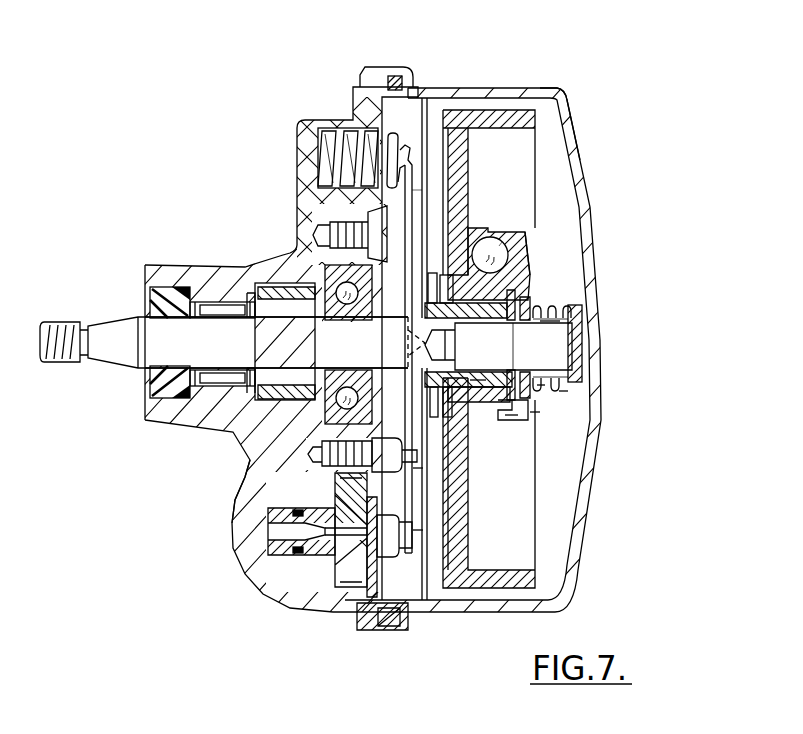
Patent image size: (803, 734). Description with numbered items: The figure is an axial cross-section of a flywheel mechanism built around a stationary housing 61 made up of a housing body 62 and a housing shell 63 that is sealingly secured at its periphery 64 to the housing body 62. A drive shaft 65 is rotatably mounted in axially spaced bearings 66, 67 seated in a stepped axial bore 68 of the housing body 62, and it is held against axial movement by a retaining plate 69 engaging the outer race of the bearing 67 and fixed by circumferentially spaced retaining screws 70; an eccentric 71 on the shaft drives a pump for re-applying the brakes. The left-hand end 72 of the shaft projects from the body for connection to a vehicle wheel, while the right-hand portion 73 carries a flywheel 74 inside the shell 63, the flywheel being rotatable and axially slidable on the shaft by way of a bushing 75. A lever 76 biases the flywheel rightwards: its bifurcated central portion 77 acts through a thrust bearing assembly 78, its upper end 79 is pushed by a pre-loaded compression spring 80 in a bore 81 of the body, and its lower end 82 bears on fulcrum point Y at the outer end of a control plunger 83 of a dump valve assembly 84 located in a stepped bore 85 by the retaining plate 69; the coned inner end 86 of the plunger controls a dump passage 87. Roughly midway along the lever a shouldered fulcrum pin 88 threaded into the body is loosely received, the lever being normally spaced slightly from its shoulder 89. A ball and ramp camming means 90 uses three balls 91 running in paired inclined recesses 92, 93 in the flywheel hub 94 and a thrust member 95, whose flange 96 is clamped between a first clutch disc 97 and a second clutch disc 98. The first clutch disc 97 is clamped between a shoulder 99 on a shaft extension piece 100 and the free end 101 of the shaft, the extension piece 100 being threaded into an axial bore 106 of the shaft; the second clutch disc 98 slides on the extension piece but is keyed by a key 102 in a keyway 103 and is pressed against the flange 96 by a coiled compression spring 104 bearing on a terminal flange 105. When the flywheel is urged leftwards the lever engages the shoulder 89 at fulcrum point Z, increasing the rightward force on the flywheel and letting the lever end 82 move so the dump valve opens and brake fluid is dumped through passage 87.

The stationary housing 61 is at (455, 80).
The housing body 62 is at (307, 142).
The housing shell 63 is at (540, 93).
The periphery 64 is at (383, 75).
The drive shaft 65 is at (113, 348).
The bearing 66 is at (218, 380).
The bearing 67 is at (320, 268).
The stepped axial bore 68 is at (262, 452).
The retaining plate 69 is at (375, 210).
The retaining screws 70 is at (372, 232).
The eccentric 71 is at (302, 287).
The left-hand end 72 is at (68, 355).
The right-hand portion 73 is at (250, 487).
The flywheel 74 is at (473, 113).
The bushing 75 is at (458, 398).
The lever 76 is at (415, 192).
The bifurcated central portion 77 is at (417, 268).
The thrust bearing assembly 78 is at (448, 275).
The upper end 79 is at (412, 185).
The compression spring 80 is at (378, 84).
The bore 81 is at (333, 135).
The lower end 82 is at (417, 545).
The control plunger 83 is at (395, 570).
The dump valve assembly 84 is at (345, 545).
The stepped bore 85 is at (268, 592).
The inner end 86 is at (328, 550).
The dump passage 87 is at (318, 530).
The fulcrum pin 88 is at (390, 462).
The shoulder 89 is at (425, 515).
The ball and ramp camming means 90 is at (518, 232).
The balls 91 is at (495, 252).
The inclined recesses 92 is at (499, 246).
The inclined recesses 93 is at (518, 275).
The flywheel hub 94 is at (512, 415).
The thrust member 95 is at (530, 267).
The flange 96 is at (527, 388).
The first clutch disc 97 is at (490, 343).
The second clutch disc 98 is at (522, 287).
The shoulder 99 is at (530, 346).
The shaft extension piece 100 is at (530, 395).
The free end 101 is at (535, 415).
The key 102 is at (547, 321).
The keyway 103 is at (582, 345).
The coiled compression spring 104 is at (560, 400).
The terminal flange 105 is at (540, 385).
The axial bore 106 is at (478, 385).
The fulcrum point Y is at (426, 531).
The fulcrum point Z is at (426, 469).